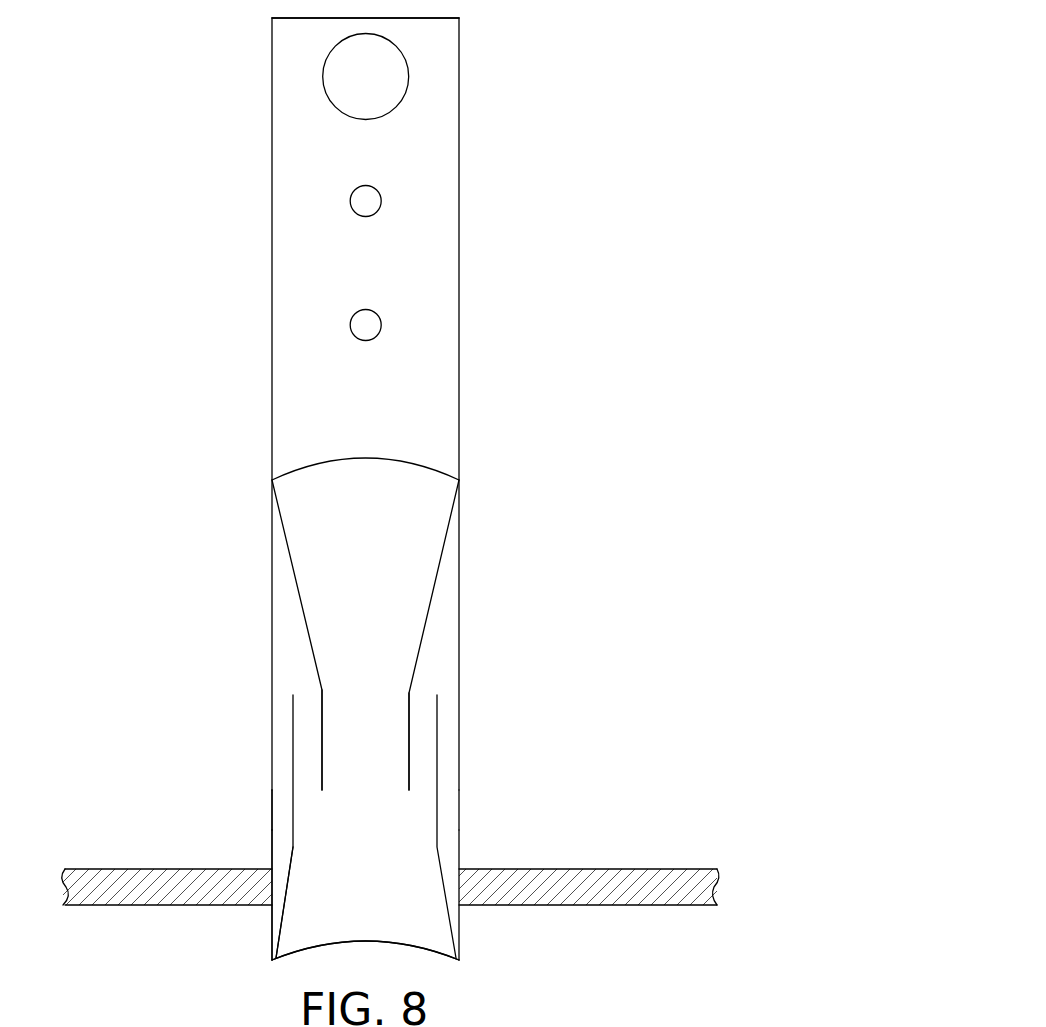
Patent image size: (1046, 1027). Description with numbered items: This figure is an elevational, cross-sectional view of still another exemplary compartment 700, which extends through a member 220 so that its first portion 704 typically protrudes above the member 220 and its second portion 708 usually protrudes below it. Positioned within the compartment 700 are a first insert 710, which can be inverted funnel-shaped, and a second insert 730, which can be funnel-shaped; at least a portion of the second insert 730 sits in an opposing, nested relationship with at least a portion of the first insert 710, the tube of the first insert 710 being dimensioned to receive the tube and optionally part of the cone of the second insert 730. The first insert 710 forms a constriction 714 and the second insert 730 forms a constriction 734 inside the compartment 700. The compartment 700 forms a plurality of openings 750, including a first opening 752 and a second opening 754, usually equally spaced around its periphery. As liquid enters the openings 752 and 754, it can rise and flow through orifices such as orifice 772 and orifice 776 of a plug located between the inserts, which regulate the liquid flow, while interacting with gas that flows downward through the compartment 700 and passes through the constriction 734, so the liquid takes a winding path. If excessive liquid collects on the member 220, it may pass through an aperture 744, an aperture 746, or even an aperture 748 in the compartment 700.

The compartment 700 is at (459, 127).
The first portion 704 is at (272, 99).
The second portion 708 is at (272, 925).
The first insert 710 is at (283, 887).
The constriction 714 is at (298, 845).
The second insert 730 is at (290, 552).
The constriction 734 is at (402, 697).
The aperture 744 is at (376, 314).
The aperture 746 is at (376, 190).
The aperture 748 is at (326, 92).
The openings 750 is at (258, 817).
The first opening 752 is at (273, 800).
The second opening 754 is at (460, 803).
The orifice 772 is at (310, 745).
The orifice 776 is at (420, 730).
The member 220 is at (622, 869).